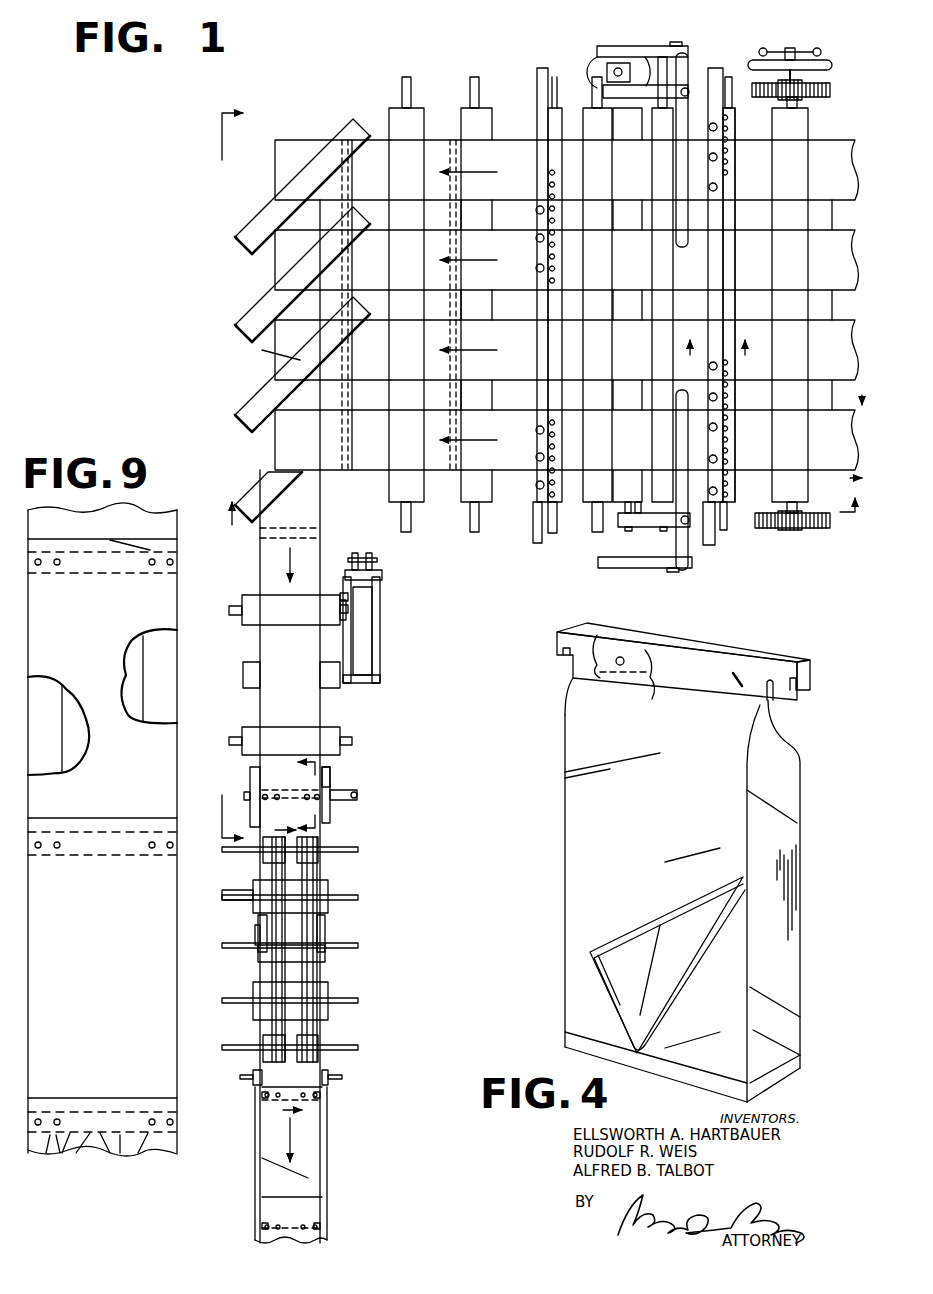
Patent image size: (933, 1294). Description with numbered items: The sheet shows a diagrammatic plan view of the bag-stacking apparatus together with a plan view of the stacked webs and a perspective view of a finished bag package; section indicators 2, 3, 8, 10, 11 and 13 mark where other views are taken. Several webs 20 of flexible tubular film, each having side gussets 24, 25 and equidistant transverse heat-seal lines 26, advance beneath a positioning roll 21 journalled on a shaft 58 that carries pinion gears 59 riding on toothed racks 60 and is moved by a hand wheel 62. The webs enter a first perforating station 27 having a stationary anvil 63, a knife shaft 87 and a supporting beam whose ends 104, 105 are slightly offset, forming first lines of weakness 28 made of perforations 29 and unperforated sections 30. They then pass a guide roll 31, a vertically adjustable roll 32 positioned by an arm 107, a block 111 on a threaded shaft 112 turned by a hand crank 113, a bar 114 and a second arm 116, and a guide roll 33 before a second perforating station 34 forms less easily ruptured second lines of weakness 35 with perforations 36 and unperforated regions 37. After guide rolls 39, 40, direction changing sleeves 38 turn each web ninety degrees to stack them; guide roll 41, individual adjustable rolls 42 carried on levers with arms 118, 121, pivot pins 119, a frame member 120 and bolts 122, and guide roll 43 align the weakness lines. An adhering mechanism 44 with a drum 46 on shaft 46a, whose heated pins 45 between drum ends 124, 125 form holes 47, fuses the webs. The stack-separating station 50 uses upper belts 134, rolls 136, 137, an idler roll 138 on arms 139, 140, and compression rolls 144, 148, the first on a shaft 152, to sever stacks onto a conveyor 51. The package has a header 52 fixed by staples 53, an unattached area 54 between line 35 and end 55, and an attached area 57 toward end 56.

In FIG. 1, the section line 2- 2 is at (530, 508).
In FIG. 1, the section line 3- 3 is at (232, 475).
In FIG. 1, the section line 8- 8 is at (283, 965).
In FIG. 1, the section line 10- 10 is at (302, 795).
In FIG. 1, the section line 11- 11 is at (717, 336).
In FIG. 1, the section line 13- 13 is at (847, 431).
In FIG. 1, the webs 20 is at (345, 250).
In FIG. 9, the webs 20 is at (93, 1160).
In FIG. 1, the positioning roll 21 is at (783, 142).
In FIG. 9, the side gusset 24 is at (100, 643).
In FIG. 9, the side gusset 25 is at (62, 720).
In FIG. 1, the heat-seal lines 26 is at (835, 190).
In FIG. 9, the heat-seal lines 26 is at (158, 536).
In FIG. 4, the heat-seal lines 26 is at (612, 1040).
In FIG. 1, the first perforating station 27 is at (724, 62).
In FIG. 1, the first lines of weakness 28 is at (320, 1225).
In FIG. 9, the first lines of weakness 28 is at (168, 833).
In FIG. 9, the perforations 29 is at (110, 1110).
In FIG. 9, the unperforated sections 30 is at (64, 1110).
In FIG. 1, the guide roll 31 is at (670, 310).
In FIG. 1, the vertically adjustable roll 32 is at (630, 506).
In FIG. 1, the guide roll 33 is at (596, 494).
In FIG. 1, the second perforating station 34 is at (542, 548).
In FIG. 1, the second lines of weakness 35 is at (345, 155).
In FIG. 9, the second lines of weakness 35 is at (172, 855).
In FIG. 9, the perforations 36 is at (124, 1155).
In FIG. 4, the perforations 36 is at (612, 680).
In FIG. 9, the unperforated regions 37 is at (67, 1155).
In FIG. 4, the unperforated regions 37 is at (640, 672).
In FIG. 1, the direction changing sleeves 38 is at (258, 255).
In FIG. 1, the guide roll 39 is at (483, 122).
In FIG. 1, the guide roll 40 is at (396, 122).
In FIG. 1, the guide roll 41 is at (282, 598).
In FIG. 1, the vertically adjustable rolls 42 is at (243, 685).
In FIG. 1, the guide roll 43 is at (335, 735).
In FIG. 1, the adhering mechanism 44 is at (360, 772).
In FIG. 1, the heated pins 45 is at (276, 792).
In FIG. 1, the drum 46 is at (332, 775).
In FIG. 1, the shaft 46a is at (357, 797).
In FIG. 1, the holes 47 is at (262, 1228).
In FIG. 9, the holes 47 is at (40, 558).
In FIG. 4, the holes 47 is at (620, 657).
In FIG. 1, the stack-separating station 50 is at (362, 912).
In FIG. 1, the conveyor 51 is at (262, 1208).
In FIG. 4, the header section 52 is at (716, 650).
In FIG. 4, the staples 53 is at (742, 672).
In FIG. 4, the unattached area 54 is at (578, 870).
In FIG. 4, the end of stack 55 is at (688, 1080).
In FIG. 4, the end of stack 56 is at (626, 650).
In FIG. 4, the attached area 57 is at (640, 660).
In FIG. 1, the shaft 58 is at (789, 96).
In FIG. 1, the pinion gears 59 is at (803, 92).
In FIG. 1, the toothed racks 60 is at (830, 90).
In FIG. 1, the hand wheel 62 is at (832, 64).
In FIG. 1, the stationary anvil 63 is at (722, 219).
In FIG. 1, the shaft 87 is at (730, 76).
In FIG. 1, the end of supporting beam 104 is at (692, 560).
In FIG. 1, the end of supporting beam 105 is at (714, 70).
In FIG. 1, the arm 107 is at (660, 92).
In FIG. 1, the vertically movable block 111 is at (624, 72).
In FIG. 1, the threaded shaft 112 is at (614, 70).
In FIG. 1, the hand crank 113 is at (595, 68).
In FIG. 1, the bar 114 is at (682, 538).
In FIG. 1, the arm 116 is at (640, 520).
In FIG. 1, the lever arm 118 is at (352, 652).
In FIG. 1, the pivot pin 119 is at (375, 598).
In FIG. 1, the vertical frame member 120 is at (366, 605).
In FIG. 1, the lever arm 121 is at (378, 575).
In FIG. 1, the bolt 122 is at (355, 553).
In FIG. 1, the end of drum 124 is at (254, 775).
In FIG. 1, the end of drum 125 is at (330, 808).
In FIG. 1, the upper belts 134 is at (318, 965).
In FIG. 1, the roll 136 is at (318, 852).
In FIG. 1, the drive roll 137 is at (318, 1042).
In FIG. 1, the idler roll 138 is at (258, 920).
In FIG. 1, the support arm 139 is at (325, 936).
In FIG. 1, the support arm 140 is at (255, 936).
In FIG. 1, the compression roll 144 is at (328, 893).
In FIG. 1, the compression roll 148 is at (328, 992).
In FIG. 1, the central shaft 152 is at (247, 892).